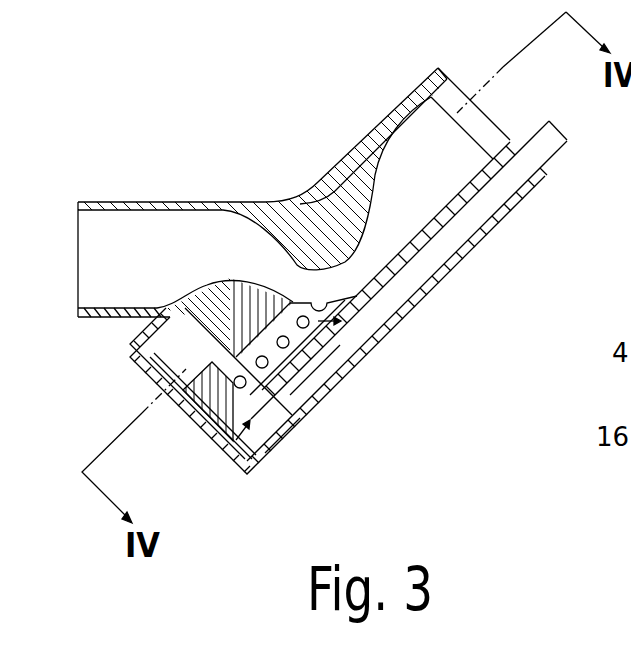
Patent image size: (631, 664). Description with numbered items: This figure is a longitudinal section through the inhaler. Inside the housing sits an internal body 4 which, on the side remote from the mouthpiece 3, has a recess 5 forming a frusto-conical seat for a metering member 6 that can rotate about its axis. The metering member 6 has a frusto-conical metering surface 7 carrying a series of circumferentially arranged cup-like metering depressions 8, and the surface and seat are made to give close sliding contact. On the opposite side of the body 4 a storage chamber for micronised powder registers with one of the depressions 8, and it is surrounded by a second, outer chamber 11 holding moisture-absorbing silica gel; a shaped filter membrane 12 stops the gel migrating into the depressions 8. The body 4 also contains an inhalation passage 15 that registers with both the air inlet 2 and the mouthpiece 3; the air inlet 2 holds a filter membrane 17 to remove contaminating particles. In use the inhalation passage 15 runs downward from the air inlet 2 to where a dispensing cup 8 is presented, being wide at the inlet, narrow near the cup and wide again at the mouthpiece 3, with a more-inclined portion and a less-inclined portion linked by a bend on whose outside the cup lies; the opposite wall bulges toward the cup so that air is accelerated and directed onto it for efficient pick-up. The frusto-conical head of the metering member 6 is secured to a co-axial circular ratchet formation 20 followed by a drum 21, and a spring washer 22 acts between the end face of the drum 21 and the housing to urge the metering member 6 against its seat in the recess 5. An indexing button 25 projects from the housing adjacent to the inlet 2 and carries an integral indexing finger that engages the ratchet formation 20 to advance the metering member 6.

The air inlet 2 is at (483, 107).
The mouthpiece 3 is at (122, 233).
The internal body 4 is at (315, 190).
The recess 5 is at (303, 398).
The metering member 6 is at (232, 452).
The frusto-conical metering surface 7 is at (368, 312).
The metering depressions 8 is at (294, 291).
The second outer chamber 11 is at (183, 352).
The shaped filter membrane 12 is at (179, 397).
The inhalation passage 15 is at (417, 163).
The filter membrane 17 is at (495, 128).
The circular ratchet formation 20 is at (333, 343).
The drum 21 is at (287, 435).
The spring washer 22 is at (312, 400).
The indexing button 25 is at (542, 144).